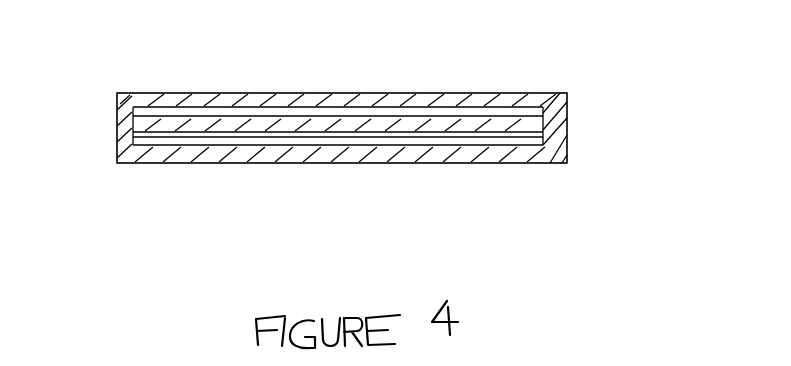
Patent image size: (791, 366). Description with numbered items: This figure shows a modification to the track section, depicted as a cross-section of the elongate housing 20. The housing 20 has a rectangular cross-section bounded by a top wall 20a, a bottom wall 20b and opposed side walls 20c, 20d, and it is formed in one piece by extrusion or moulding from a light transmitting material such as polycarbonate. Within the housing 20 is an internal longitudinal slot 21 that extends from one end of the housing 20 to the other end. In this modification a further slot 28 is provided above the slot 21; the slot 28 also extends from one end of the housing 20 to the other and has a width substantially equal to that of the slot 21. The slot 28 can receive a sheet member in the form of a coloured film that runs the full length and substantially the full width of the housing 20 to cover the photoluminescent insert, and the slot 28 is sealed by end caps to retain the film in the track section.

The elongate housing 20 is at (620, 81).
The top wall 20a is at (226, 92).
The bottom wall 20b is at (233, 167).
The side wall 20c is at (572, 125).
The side wall 20d is at (114, 128).
The slot 28 is at (423, 108).
The internal longitudinal slot 21 is at (486, 140).